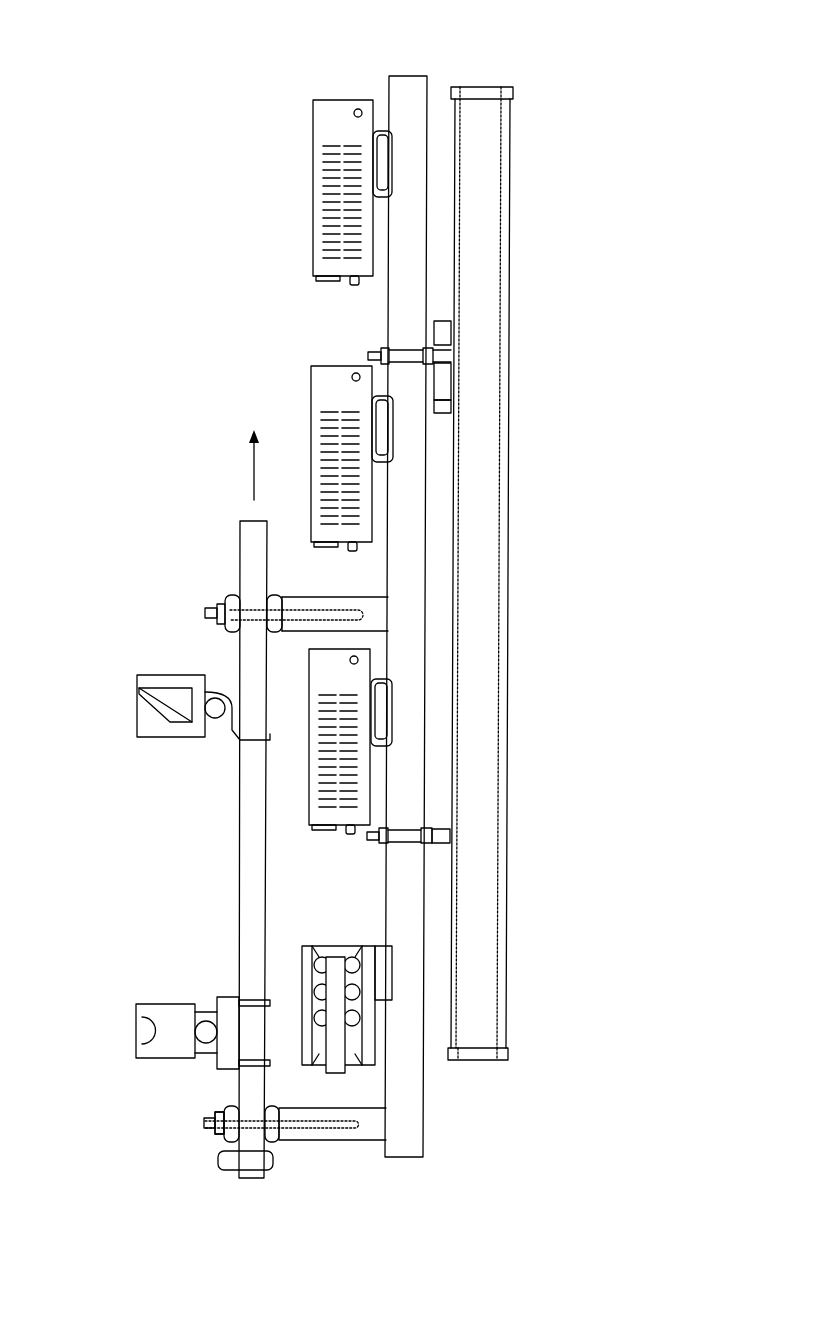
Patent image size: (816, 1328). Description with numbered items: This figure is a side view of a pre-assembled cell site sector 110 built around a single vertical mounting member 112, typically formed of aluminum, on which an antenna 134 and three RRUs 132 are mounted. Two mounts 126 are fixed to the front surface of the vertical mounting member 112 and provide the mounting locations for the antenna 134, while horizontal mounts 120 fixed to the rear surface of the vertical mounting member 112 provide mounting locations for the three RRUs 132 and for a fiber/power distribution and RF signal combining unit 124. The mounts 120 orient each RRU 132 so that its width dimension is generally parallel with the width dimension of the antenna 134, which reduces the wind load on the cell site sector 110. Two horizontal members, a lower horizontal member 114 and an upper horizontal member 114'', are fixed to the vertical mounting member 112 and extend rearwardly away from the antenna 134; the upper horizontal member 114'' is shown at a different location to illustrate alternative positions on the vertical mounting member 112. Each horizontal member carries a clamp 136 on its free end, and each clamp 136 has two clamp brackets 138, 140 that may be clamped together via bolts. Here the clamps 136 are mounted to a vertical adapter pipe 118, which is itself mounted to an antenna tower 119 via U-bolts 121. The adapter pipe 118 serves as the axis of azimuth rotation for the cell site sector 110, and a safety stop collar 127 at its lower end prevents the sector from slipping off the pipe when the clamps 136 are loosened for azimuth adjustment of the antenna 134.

The cell site sector 110 is at (655, 150).
The vertical mounting member 112 is at (407, 88).
The horizontal member 114 is at (295, 1170).
The upper horizontal member 114'' is at (265, 578).
The vertical adapter pipe 118 is at (253, 1173).
The antenna tower 119 is at (180, 1041).
The horizontal mount 120 is at (393, 160).
The U-bolt 121 is at (253, 1000).
The fiber/power distribution and RF signal combining unit 124 is at (362, 1042).
The mount 126 is at (447, 366).
The safety stop collar 127 is at (228, 1171).
The RRU 132 is at (337, 112).
The antenna 134 is at (489, 416).
The clamp 136 is at (184, 639).
The clamp bracket 138 is at (277, 1143).
The clamp bracket 140 is at (217, 1134).